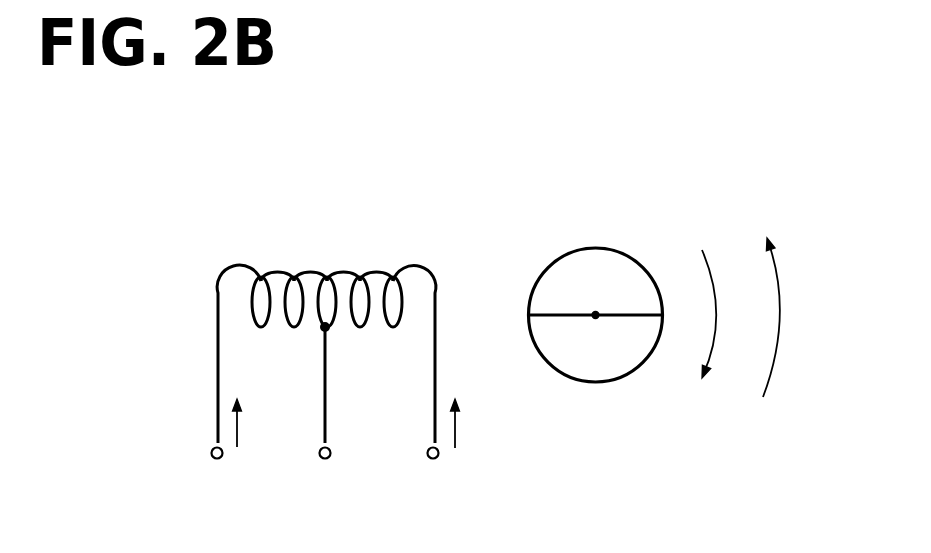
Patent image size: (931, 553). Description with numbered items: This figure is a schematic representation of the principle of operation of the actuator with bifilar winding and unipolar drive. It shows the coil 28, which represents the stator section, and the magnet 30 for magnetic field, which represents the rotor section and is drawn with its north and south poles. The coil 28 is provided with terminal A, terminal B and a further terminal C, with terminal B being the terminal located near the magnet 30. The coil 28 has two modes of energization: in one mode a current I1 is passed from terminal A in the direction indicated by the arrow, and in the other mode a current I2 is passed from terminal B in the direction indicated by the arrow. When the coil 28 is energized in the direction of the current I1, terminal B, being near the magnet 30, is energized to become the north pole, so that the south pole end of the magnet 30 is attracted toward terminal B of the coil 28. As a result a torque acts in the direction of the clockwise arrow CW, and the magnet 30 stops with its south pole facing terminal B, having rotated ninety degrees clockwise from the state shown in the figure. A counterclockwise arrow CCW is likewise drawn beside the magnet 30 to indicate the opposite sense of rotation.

The coil 28 is at (344, 271).
The magnet for magnetic field 30 is at (598, 249).
The terminal A is at (216, 481).
The terminal B is at (434, 481).
The coil center tap terminal C is at (326, 481).
The current I1 is at (242, 398).
The current I2 is at (462, 398).
The clockwise arrow CW is at (695, 339).
The counterclockwise rotation direction CCW is at (770, 294).